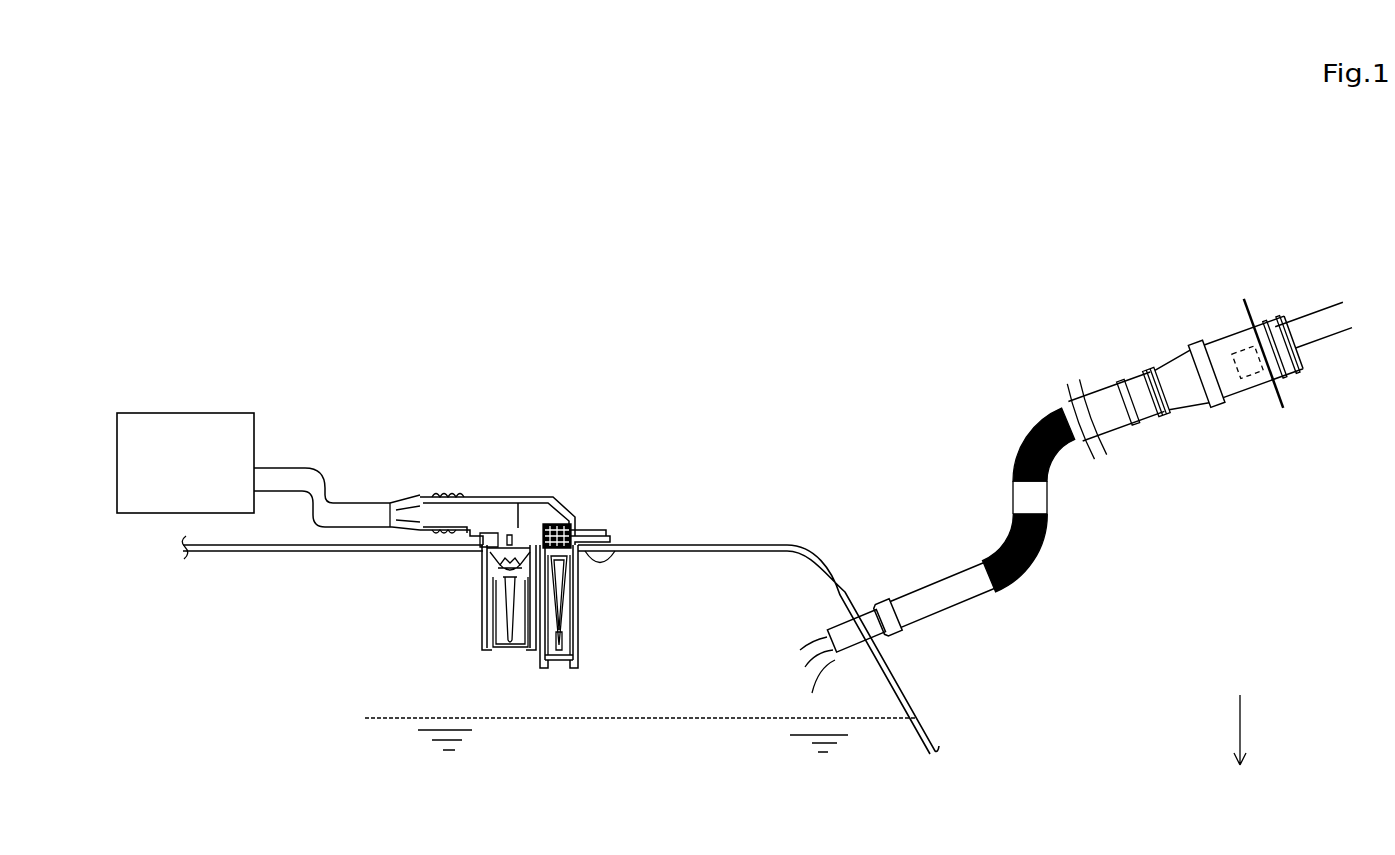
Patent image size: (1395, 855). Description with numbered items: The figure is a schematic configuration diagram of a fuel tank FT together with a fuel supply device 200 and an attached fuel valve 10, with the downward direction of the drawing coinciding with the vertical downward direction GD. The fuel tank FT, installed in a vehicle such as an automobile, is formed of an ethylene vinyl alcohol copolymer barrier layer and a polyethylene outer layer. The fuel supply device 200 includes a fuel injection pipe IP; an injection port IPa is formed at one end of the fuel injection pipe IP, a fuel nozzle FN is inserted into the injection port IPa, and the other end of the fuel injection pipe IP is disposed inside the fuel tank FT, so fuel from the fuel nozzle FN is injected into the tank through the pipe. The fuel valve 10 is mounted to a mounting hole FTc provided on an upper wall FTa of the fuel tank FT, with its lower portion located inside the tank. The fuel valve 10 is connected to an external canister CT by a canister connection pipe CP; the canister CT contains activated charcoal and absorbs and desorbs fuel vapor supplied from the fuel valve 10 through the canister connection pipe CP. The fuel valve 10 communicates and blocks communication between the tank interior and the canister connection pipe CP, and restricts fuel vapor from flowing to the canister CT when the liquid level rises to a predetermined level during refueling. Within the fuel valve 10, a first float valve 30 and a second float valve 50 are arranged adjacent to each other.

The fuel valve 10 is at (571, 469).
The first float valve 30 is at (484, 605).
The second float valve 50 is at (574, 600).
The fuel supply device 200 is at (1085, 555).
The fuel tank FT is at (591, 607).
The upper wall FTa is at (680, 544).
The mounting hole FTc is at (617, 548).
The canister CT is at (212, 422).
The canister connection pipe CP is at (313, 478).
The fuel injection pipe IP is at (1195, 400).
The injection port IPa is at (1305, 365).
The fuel nozzle FN is at (1317, 314).
The vertical downward direction GD is at (1259, 730).